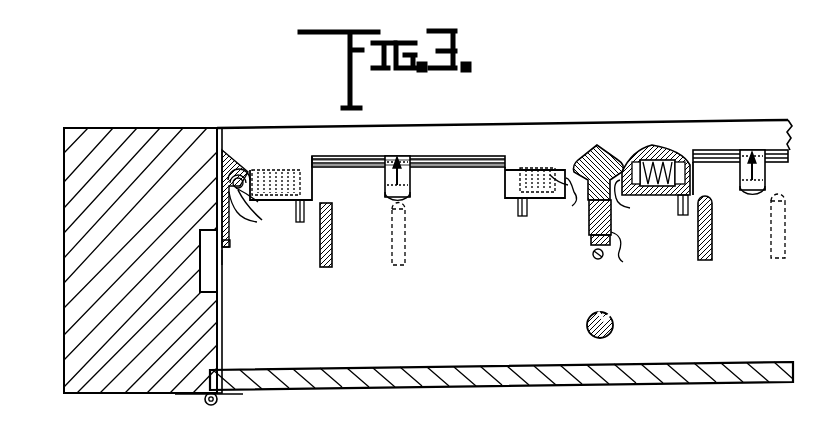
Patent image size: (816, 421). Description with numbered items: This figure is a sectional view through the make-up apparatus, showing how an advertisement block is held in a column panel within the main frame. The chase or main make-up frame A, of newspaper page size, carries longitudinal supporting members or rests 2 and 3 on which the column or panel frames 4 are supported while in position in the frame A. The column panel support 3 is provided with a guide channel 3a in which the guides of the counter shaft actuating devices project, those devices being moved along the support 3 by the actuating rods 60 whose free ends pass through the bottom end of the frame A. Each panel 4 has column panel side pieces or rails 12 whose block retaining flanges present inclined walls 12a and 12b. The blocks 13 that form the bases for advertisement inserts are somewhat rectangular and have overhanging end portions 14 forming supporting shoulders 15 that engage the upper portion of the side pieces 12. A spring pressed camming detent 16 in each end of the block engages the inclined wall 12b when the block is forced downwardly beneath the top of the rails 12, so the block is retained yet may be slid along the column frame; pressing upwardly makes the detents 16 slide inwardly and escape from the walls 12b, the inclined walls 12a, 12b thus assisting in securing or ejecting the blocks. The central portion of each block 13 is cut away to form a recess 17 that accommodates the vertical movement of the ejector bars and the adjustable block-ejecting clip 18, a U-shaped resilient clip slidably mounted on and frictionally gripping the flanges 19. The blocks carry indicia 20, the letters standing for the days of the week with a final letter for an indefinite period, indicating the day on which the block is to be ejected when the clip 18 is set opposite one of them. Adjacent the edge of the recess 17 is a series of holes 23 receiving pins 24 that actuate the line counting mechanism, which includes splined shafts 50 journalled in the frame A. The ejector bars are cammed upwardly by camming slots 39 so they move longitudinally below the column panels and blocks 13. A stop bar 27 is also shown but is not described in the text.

The chase or main make-up frame A is at (128, 130).
The longitudinal supporting member or rest 2 is at (232, 238).
The longitudinal supporting member or rest 3 is at (588, 227).
The guide channel 3a is at (586, 242).
The column or panel frame 4 is at (640, 112).
The column panel side piece or rail 12 is at (590, 165).
The inclined wall 12a is at (668, 118).
The inclined wall 12b is at (451, 209).
The block 13 is at (394, 128).
The overhanging end portion 14 is at (231, 158).
The supporting shoulder 15 is at (238, 157).
The spring pressed camming detent 16 is at (254, 178).
The recess 17 is at (504, 172).
The adjustable block-ejecting clip 18 is at (410, 186).
The flange 19 is at (476, 168).
The indicia 20 is at (455, 127).
The hole 23 is at (300, 194).
The pin 24 is at (518, 206).
The stop bar 27 is at (392, 258).
The camming slot 39 is at (626, 259).
The splined shaft 50 is at (612, 318).
The actuating rod 60 is at (600, 260).